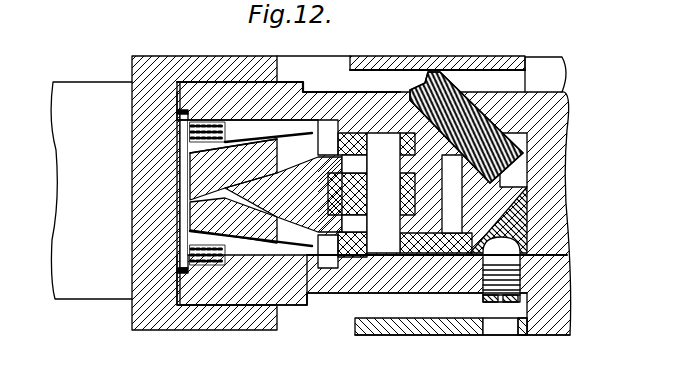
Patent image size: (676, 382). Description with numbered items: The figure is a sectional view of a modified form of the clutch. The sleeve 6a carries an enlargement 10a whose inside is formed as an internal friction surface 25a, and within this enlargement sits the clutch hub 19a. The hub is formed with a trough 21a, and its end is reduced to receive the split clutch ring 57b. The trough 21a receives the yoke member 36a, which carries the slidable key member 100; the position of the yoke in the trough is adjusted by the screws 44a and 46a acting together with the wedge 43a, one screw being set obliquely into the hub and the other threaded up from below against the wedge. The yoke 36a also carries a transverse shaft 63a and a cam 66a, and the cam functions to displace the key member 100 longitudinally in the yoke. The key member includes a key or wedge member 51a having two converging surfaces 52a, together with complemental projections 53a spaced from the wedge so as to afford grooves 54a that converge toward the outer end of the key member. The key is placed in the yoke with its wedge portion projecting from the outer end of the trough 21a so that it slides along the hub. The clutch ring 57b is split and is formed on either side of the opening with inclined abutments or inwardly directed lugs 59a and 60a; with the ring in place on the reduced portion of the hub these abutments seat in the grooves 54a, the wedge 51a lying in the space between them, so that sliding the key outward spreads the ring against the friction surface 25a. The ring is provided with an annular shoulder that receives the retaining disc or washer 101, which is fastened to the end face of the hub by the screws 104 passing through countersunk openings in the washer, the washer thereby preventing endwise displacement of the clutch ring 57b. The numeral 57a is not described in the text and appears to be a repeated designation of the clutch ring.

The sleeve 6a is at (57, 301).
The enlargement 10a is at (132, 322).
The clutch hub 19a is at (570, 172).
The trough 21a is at (395, 112).
The internal friction surface 25a is at (186, 306).
The yoke member 36a is at (437, 258).
The wedge 43a is at (561, 237).
The screw 44a is at (463, 88).
The screw 46a is at (516, 296).
The key or wedge member 51a is at (262, 250).
The converging surfaces 52a is at (328, 150).
The complemental projections 53a is at (268, 80).
The grooves 54a is at (295, 158).
The spacer blocks 57a is at (299, 270).
The clutch ring 57b is at (208, 100).
The inclined abutment 59a is at (196, 212).
The inclined abutment 60a is at (192, 158).
The transverse shaft 63a is at (418, 258).
The cam 66a is at (381, 237).
The key member 100 is at (424, 320).
The retaining disc or washer 101 is at (186, 110).
The screws 104 is at (192, 128).